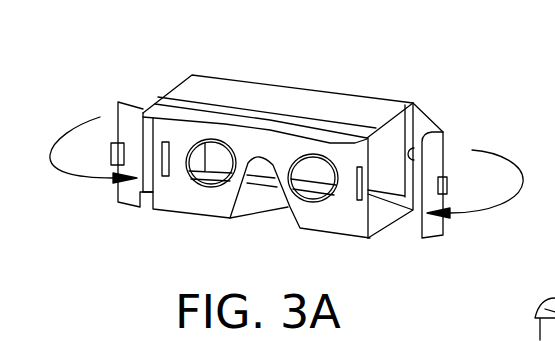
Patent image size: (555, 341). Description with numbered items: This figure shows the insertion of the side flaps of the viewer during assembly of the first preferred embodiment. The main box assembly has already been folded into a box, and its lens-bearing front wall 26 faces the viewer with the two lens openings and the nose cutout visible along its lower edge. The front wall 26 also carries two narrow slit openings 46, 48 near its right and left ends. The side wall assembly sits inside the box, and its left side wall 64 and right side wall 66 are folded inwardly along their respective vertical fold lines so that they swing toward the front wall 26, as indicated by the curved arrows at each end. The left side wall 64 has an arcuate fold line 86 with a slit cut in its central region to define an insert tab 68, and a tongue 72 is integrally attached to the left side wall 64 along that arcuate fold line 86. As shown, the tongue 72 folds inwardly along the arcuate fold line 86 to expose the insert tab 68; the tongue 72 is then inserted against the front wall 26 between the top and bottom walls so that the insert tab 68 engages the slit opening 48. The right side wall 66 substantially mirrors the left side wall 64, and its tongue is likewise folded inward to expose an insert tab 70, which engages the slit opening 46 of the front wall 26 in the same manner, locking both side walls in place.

The front wall 26 is at (165, 198).
The slit opening 46 is at (358, 200).
The slit opening 48 is at (171, 160).
The left side wall 64 is at (145, 112).
The right side wall 66 is at (424, 123).
The insert tab 68 is at (110, 148).
The insert tab 70 is at (450, 182).
The tongue 72 is at (127, 112).
The arcuate fold line 86 is at (117, 143).